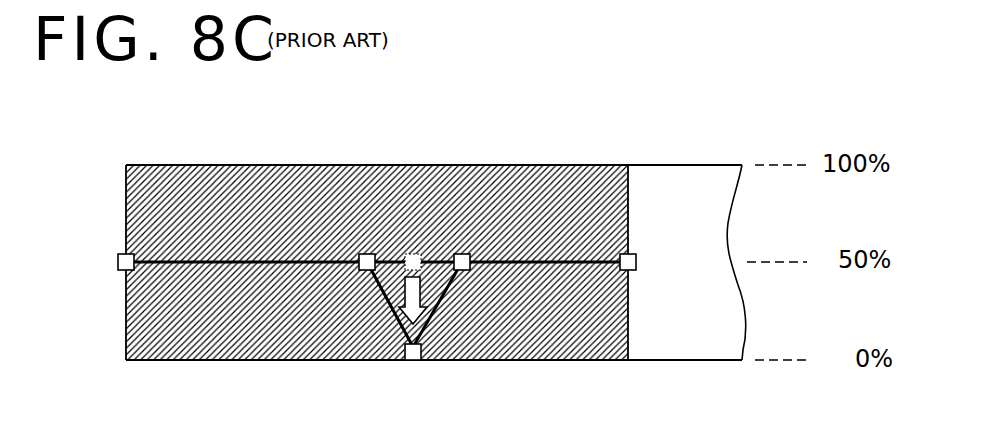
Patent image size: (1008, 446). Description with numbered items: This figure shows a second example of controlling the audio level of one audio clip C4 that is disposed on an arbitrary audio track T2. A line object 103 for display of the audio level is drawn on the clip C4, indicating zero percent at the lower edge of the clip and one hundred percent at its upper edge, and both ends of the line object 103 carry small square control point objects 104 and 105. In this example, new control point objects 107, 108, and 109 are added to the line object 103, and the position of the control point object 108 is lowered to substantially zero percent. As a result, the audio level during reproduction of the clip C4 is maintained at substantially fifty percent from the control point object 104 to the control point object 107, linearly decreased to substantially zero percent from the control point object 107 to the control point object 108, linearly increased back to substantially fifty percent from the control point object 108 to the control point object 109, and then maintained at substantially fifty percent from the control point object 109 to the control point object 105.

The line object 103 is at (293, 258).
The control point object 104 is at (125, 254).
The control point object 105 is at (637, 268).
The control point object 107 is at (366, 271).
The control point object 108 is at (418, 250).
The control point object 109 is at (462, 271).
The audio clip C4 is at (576, 213).
The audio track T2 is at (692, 251).